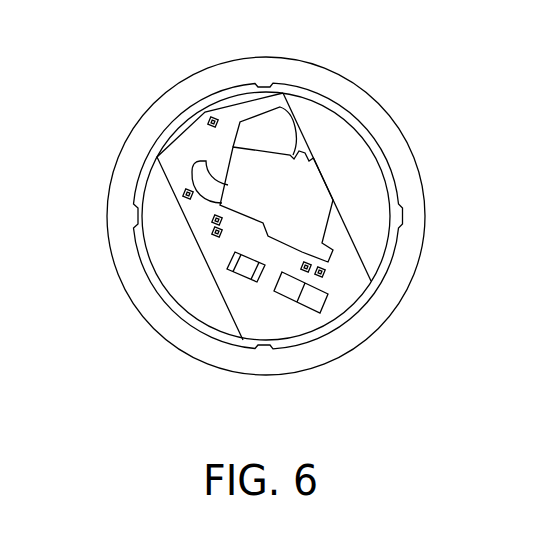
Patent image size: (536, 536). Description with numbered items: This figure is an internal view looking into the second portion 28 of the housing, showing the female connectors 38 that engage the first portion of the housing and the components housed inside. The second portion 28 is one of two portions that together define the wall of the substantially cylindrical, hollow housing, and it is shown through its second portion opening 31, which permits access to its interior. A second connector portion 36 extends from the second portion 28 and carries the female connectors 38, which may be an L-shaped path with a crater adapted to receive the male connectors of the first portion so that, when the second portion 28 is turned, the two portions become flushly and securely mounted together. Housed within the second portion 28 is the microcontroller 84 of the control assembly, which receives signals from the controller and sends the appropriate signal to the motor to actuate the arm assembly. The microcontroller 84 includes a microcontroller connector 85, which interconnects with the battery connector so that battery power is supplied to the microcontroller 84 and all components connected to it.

The second portion 28 is at (364, 111).
The second portion opening 31 is at (170, 156).
The second connector portion 36 is at (388, 250).
The female connectors 38 is at (134, 214).
The microcontroller 84 is at (352, 299).
The microcontroller connector 85 is at (316, 167).